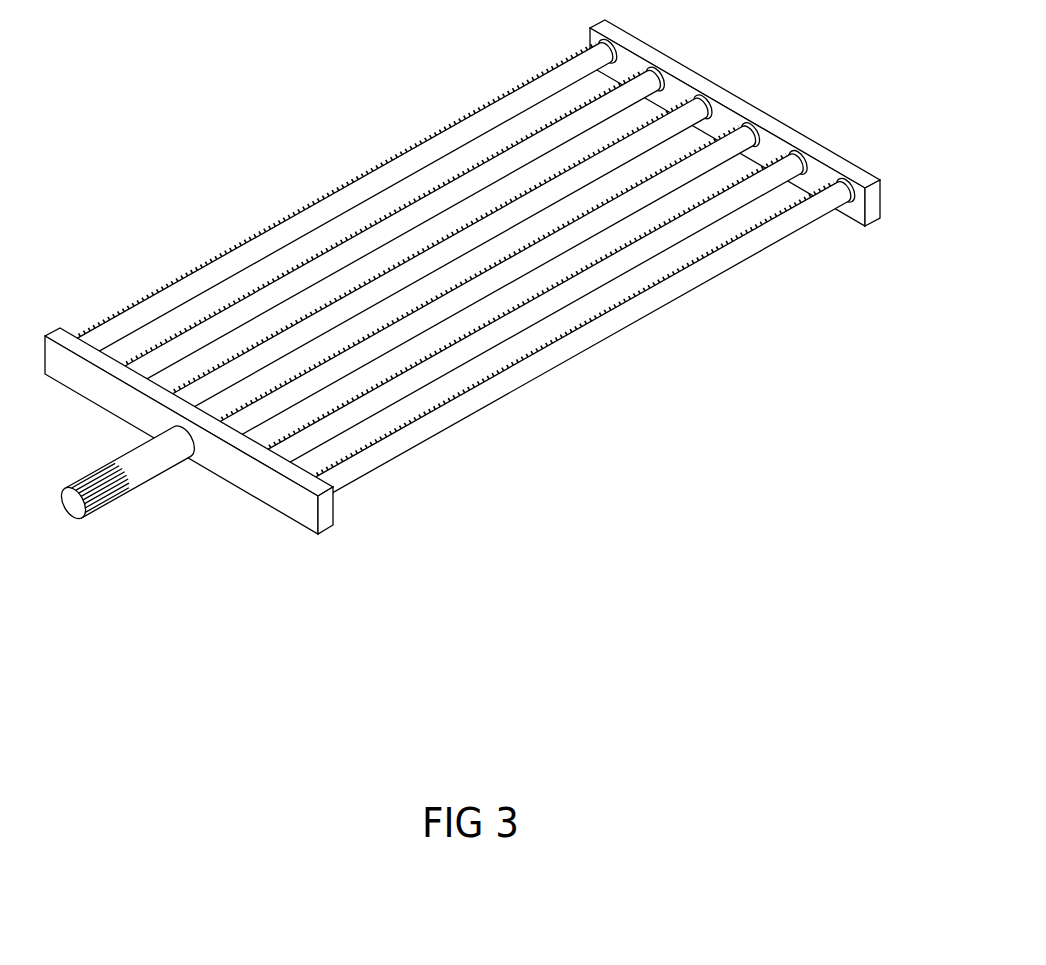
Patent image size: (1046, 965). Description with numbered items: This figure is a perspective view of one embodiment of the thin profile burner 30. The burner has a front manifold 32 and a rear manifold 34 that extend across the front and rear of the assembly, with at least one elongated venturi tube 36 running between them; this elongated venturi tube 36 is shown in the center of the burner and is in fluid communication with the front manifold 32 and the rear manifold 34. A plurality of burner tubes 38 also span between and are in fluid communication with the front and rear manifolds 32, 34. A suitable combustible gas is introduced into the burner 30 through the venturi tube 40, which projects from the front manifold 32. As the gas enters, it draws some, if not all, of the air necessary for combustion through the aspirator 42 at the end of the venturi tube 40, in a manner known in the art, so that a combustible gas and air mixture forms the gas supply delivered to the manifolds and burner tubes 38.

The thin profile burner 30 is at (503, 312).
The front manifold 32 is at (302, 508).
The rear manifold 34 is at (875, 214).
The elongated venturi tube 36 is at (717, 135).
The burner tubes 38 is at (482, 182).
The venturi tube 40 is at (130, 460).
The aspirator 42 is at (110, 500).